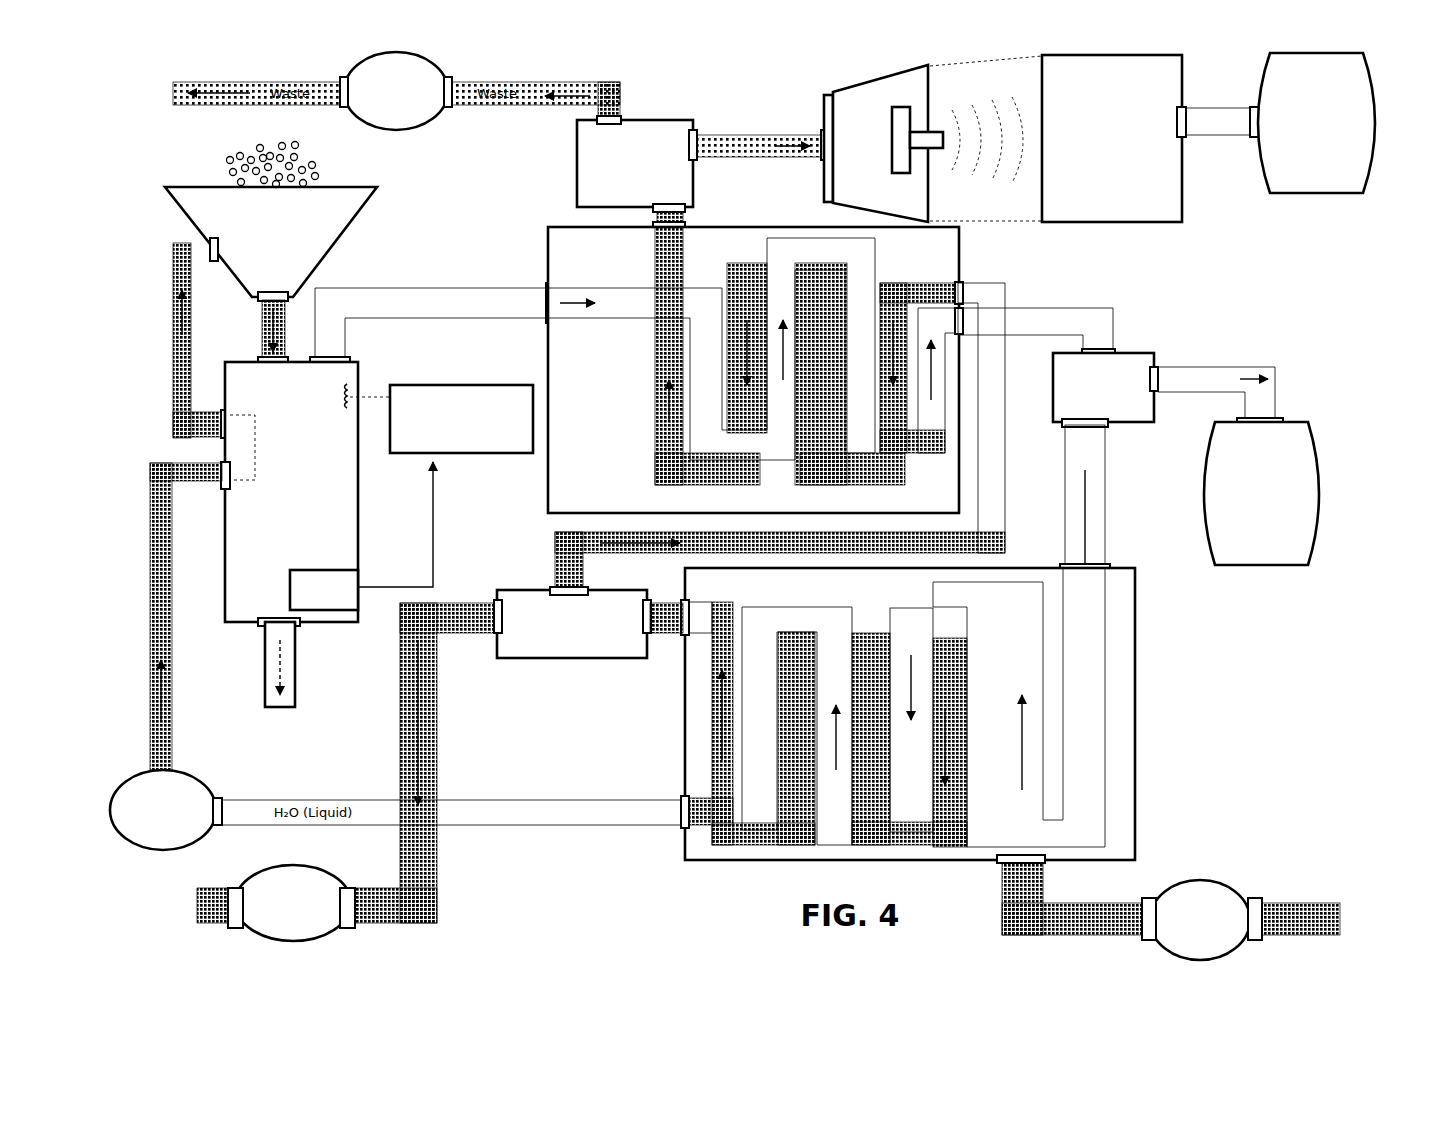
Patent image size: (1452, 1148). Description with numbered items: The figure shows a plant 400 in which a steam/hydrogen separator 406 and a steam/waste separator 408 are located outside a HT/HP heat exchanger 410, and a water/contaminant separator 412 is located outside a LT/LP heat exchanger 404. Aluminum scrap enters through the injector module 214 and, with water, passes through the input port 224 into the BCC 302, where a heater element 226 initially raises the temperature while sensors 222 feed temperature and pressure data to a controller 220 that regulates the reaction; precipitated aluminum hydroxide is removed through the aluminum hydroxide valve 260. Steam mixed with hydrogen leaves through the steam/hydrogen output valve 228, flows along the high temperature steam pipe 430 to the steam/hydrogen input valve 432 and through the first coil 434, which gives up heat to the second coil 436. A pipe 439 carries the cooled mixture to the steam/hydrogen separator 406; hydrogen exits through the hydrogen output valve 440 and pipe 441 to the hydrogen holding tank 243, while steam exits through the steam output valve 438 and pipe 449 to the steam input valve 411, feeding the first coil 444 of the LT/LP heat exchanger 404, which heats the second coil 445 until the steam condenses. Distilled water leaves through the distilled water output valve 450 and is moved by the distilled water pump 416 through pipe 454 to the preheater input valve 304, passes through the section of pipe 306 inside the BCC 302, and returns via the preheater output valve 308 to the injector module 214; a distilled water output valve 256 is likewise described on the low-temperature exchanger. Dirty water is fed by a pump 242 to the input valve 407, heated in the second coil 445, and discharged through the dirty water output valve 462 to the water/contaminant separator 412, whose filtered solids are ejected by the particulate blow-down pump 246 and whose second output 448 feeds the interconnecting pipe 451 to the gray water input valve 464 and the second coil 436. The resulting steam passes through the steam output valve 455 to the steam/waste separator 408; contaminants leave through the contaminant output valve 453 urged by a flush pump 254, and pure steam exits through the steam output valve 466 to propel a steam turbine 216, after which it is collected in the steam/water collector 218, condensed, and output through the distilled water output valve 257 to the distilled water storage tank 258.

The plant 400 is at (1242, 658).
The injector module 214 is at (355, 202).
The steam turbine 216 is at (875, 90).
The steam/water collector 218 is at (1112, 138).
The controller 220 is at (480, 455).
The sensors 222 is at (345, 560).
The input port 224 is at (258, 340).
The heater element 226 is at (352, 393).
The steam/hydrogen output valve 228 is at (350, 360).
The pump 242 is at (1205, 897).
The hydrogen holding tank 243 is at (1272, 548).
The particulate blow-down pump 246 is at (288, 870).
The flush pump 254 is at (373, 118).
The distilled water output valve 256 is at (395, 795).
The distilled water output valve 257 is at (1185, 135).
The distilled water storage tank 258 is at (1345, 175).
The aluminum hydroxide valve 260 is at (297, 630).
The BCC 302 is at (291, 492).
The preheater input valve 304 is at (225, 490).
The section of pipe 306 is at (253, 452).
The preheater output valve 308 is at (225, 410).
The LT/LP heat exchanger 404 is at (921, 714).
The steam/hydrogen separator 406 is at (1140, 416).
The input valve 407 is at (1000, 868).
The steam/waste separator 408 is at (585, 180).
The HT/HP heat exchanger 410 is at (753, 370).
The steam input valve 411 is at (1110, 566).
The water/contaminant separator 412 is at (600, 652).
The distilled water pump 416 is at (185, 782).
The high temperature steam pipe 430 is at (486, 283).
The steam/hydrogen input valve 432 is at (530, 328).
The first coil 434 is at (615, 310).
The second coil 436 is at (668, 390).
The steam output valve 438 is at (1060, 428).
The pipe 439 is at (965, 318).
The hydrogen output valve 440 is at (1158, 365).
The pipe 441 is at (1262, 372).
The first coil 444 is at (1100, 700).
The second coil 445 is at (715, 720).
The second output 448 is at (548, 583).
The pipe 449 is at (1105, 485).
The distilled water output valve 450 is at (677, 820).
The interconnecting pipe 451 is at (560, 545).
The contaminant output valve 453 is at (620, 112).
The pipe 454 is at (165, 468).
The steam output valve 455 is at (685, 224).
The dirty water output valve 462 is at (672, 598).
The gray water input valve 464 is at (963, 283).
The steam output valve 466 is at (697, 130).